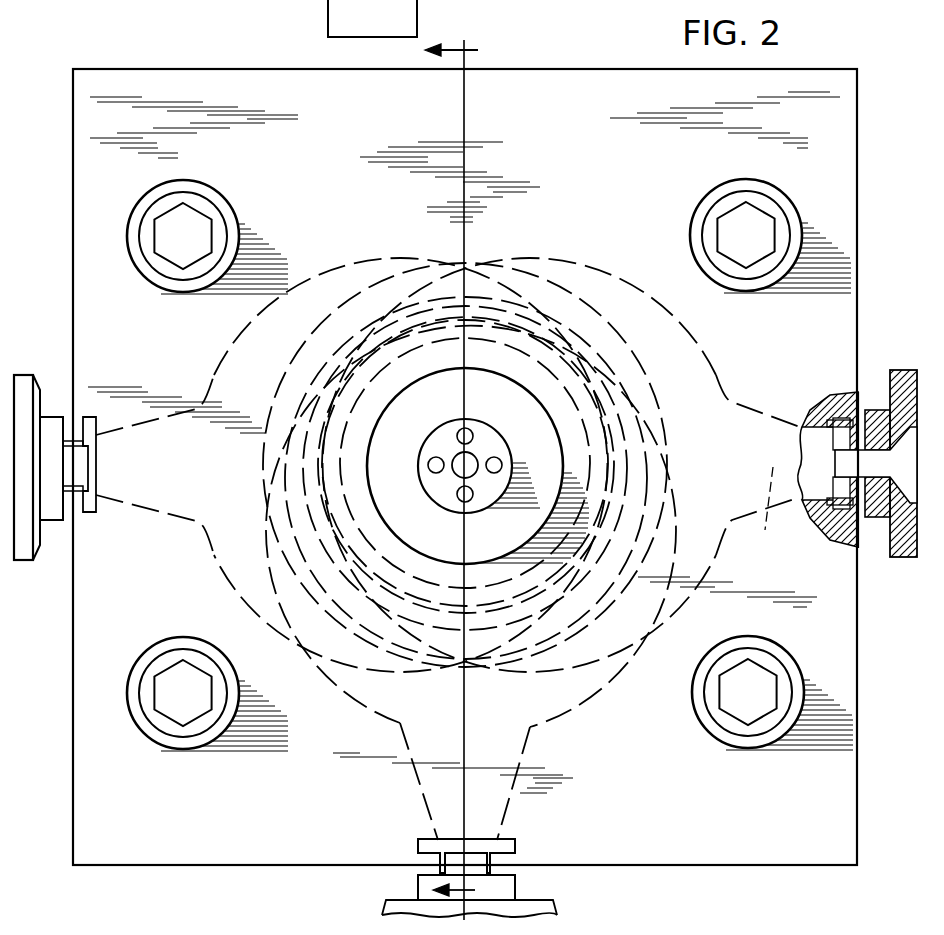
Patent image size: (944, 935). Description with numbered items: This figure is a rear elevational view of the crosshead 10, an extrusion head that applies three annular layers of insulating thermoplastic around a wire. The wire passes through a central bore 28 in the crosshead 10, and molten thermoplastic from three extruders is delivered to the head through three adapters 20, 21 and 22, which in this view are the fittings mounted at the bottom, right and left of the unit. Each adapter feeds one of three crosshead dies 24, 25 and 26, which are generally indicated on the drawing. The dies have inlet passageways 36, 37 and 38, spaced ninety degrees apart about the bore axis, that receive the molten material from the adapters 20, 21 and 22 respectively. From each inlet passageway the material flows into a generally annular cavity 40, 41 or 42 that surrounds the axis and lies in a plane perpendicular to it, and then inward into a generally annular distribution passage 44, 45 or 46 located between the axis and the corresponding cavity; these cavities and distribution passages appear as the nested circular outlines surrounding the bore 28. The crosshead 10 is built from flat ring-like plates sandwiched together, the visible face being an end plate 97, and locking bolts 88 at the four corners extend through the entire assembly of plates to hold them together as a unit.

The crosshead 10 is at (605, 58).
The adapter 20 is at (505, 885).
The adapter 21 is at (880, 410).
The adapter 22 is at (52, 418).
The crosshead die 24 is at (522, 803).
The crosshead die 25 is at (774, 405).
The crosshead die 26 is at (135, 412).
The bore 28 is at (470, 470).
The inlet passageway 36 is at (440, 800).
The inlet passageway 37 is at (817, 467).
The inlet passageway 38 is at (138, 472).
The annular cavity 40 is at (553, 695).
The annular cavity 41 is at (612, 303).
The annular cavity 42 is at (347, 291).
The distribution passage 44 is at (420, 637).
The distribution passage 45 is at (633, 428).
The distribution passage 46 is at (300, 406).
The locking bolts 88 is at (222, 207).
The end plate 97 is at (351, 113).